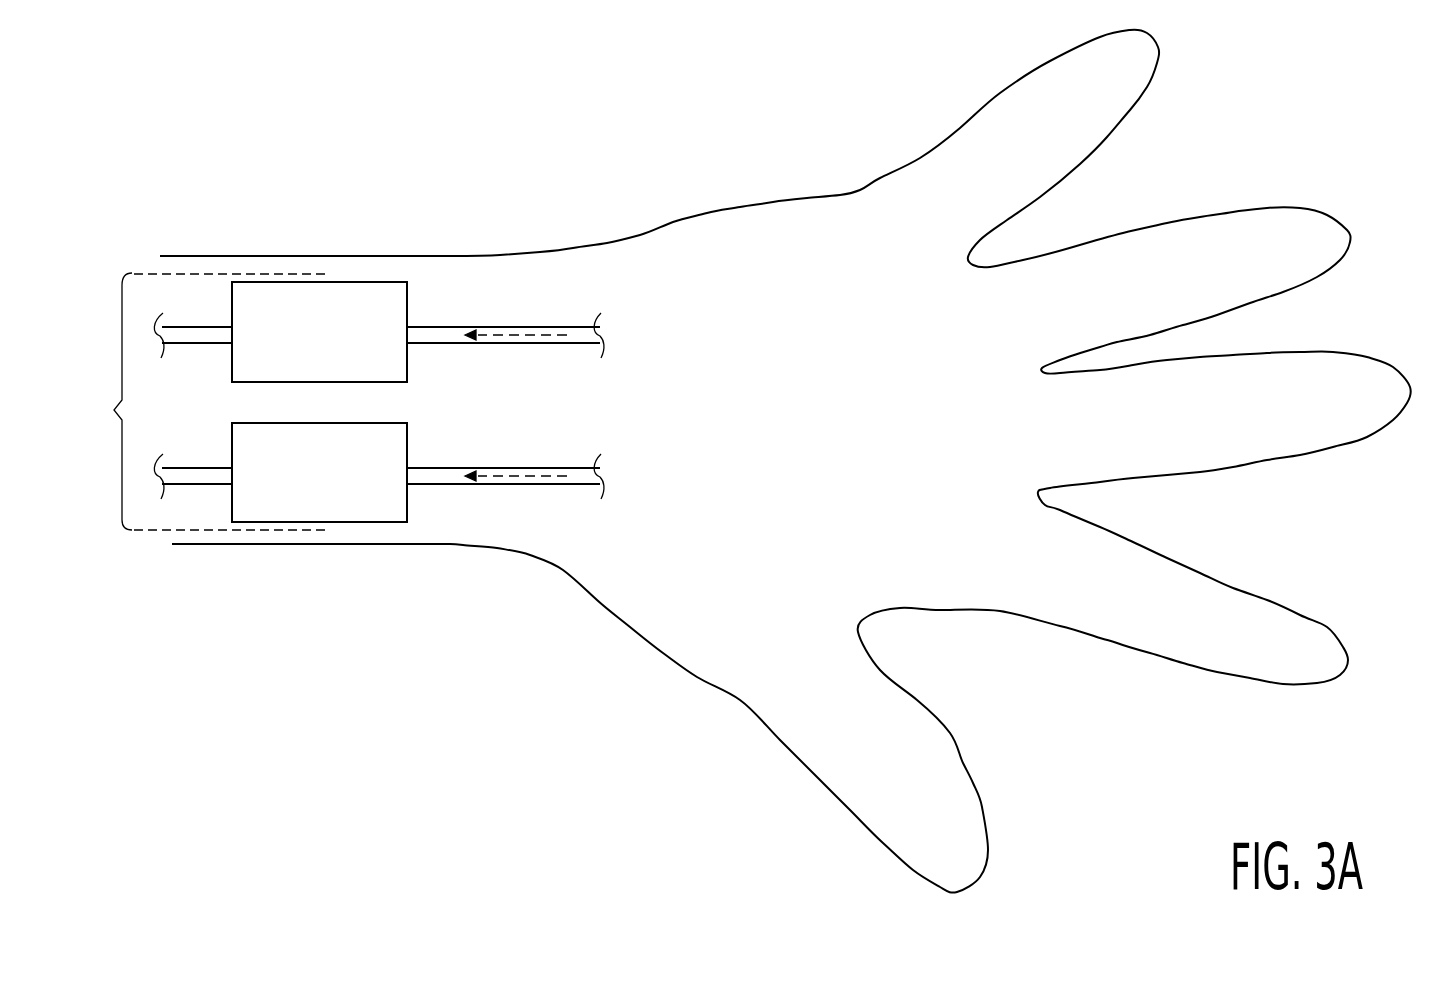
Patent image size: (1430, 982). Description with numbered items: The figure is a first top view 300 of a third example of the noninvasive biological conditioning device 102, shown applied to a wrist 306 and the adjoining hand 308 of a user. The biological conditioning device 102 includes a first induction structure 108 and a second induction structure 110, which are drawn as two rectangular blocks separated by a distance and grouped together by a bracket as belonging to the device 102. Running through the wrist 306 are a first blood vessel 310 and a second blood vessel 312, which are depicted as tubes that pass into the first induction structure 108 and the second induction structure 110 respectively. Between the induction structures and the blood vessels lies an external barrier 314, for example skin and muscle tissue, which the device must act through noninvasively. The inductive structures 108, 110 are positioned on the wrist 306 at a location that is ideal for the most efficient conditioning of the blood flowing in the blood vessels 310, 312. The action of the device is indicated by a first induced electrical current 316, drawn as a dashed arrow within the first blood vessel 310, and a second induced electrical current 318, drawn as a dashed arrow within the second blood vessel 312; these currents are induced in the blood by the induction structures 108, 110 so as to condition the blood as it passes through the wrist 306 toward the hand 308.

The first top view 300 is at (158, 151).
The biological conditioning device 102 is at (201, 401).
The first induction structure 108 is at (340, 345).
The second induction structure 110 is at (340, 486).
The wrist 306 is at (340, 255).
The hand 308 is at (835, 195).
The first blood vessel 310 is at (584, 325).
The second blood vessel 312 is at (582, 467).
The external barrier 314 is at (488, 273).
The first induced electrical current 316 is at (515, 341).
The second induced electrical current 318 is at (518, 486).